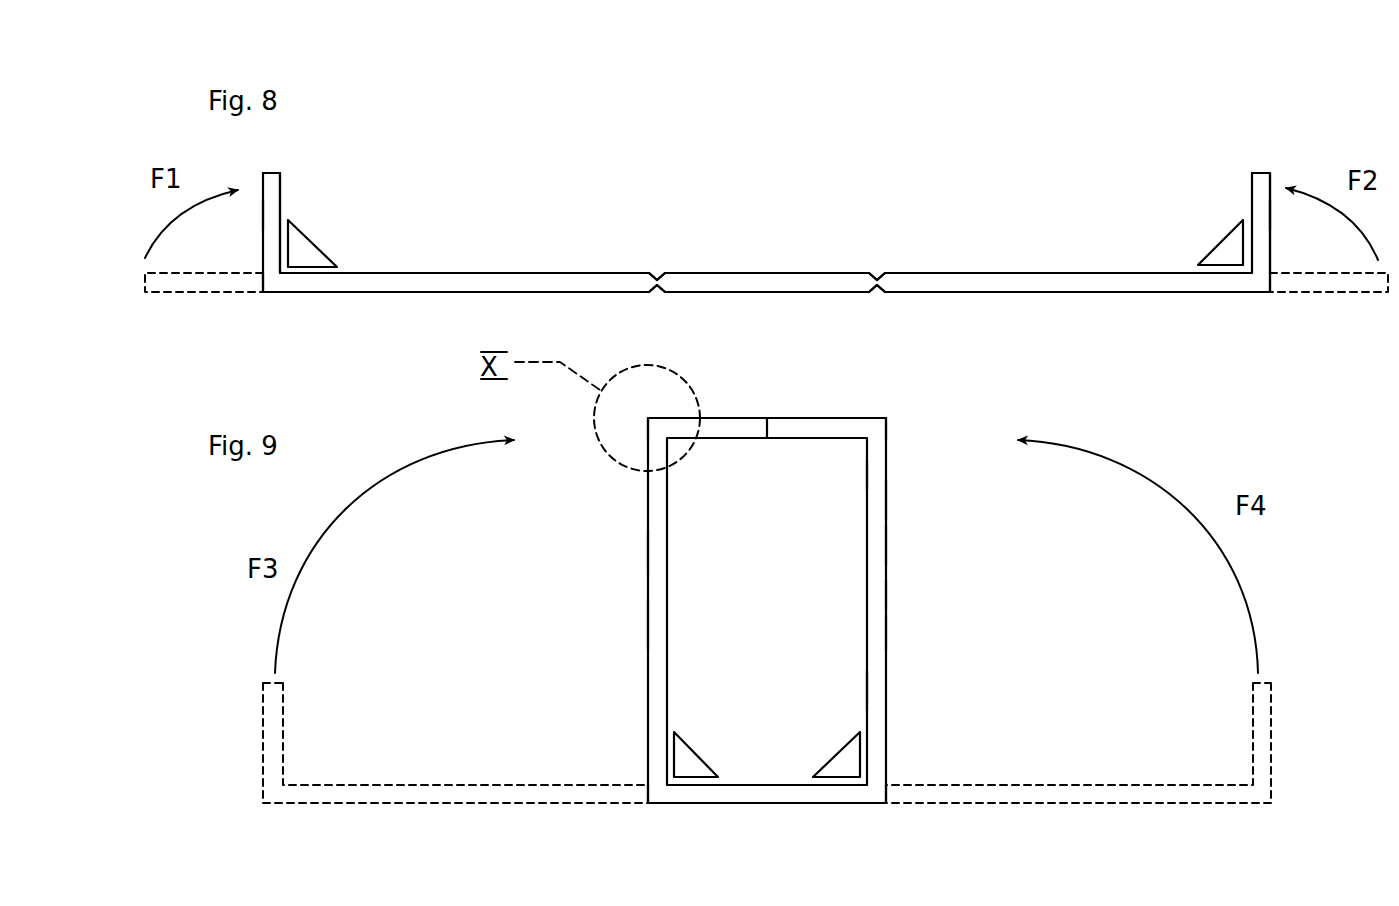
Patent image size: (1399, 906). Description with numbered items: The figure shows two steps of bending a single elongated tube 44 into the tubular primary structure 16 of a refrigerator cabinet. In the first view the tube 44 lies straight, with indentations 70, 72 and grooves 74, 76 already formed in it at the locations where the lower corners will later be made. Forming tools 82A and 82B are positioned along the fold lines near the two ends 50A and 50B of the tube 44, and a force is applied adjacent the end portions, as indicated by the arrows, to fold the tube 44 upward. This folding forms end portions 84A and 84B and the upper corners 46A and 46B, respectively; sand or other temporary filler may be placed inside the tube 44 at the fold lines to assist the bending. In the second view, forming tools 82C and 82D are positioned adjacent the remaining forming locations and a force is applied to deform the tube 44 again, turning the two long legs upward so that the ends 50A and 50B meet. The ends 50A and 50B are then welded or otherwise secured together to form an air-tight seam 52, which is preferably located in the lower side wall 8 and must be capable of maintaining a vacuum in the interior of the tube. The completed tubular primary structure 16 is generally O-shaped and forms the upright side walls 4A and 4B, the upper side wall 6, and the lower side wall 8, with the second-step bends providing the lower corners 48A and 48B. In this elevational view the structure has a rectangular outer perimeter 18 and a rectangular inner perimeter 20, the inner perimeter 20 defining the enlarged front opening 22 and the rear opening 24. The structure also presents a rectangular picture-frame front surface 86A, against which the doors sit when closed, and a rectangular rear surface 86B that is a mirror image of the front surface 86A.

In FIG. 9, the upright side wall 4A is at (647, 552).
In FIG. 9, the upright side wall 4B is at (887, 545).
In FIG. 9, the upper side wall 6 is at (852, 418).
In FIG. 9, the lower side wall 8 is at (767, 803).
In FIG. 9, the tubular primary structure 16 is at (892, 595).
In FIG. 9, the rectangular outer perimeter 18 is at (887, 503).
In FIG. 9, the rectangular inner perimeter 20 is at (860, 474).
In FIG. 9, the front opening 22 is at (742, 538).
In FIG. 9, the rear opening 24 is at (788, 538).
In FIG. 8, the elongated tube 44 is at (547, 272).
In FIG. 9, the elongated tube 44 is at (647, 624).
In FIG. 8, the upper corner 46A is at (263, 292).
In FIG. 9, the upper corner 46A is at (647, 420).
In FIG. 8, the upper corner 46B is at (1270, 290).
In FIG. 9, the upper corner 46B is at (885, 418).
In FIG. 9, the lower corner 48A is at (648, 803).
In FIG. 9, the lower corner 48B is at (886, 803).
In FIG. 8, the tube end 50A is at (273, 172).
In FIG. 9, the tube end 50A is at (755, 425).
In FIG. 8, the tube end 50B is at (1258, 173).
In FIG. 9, the tube end 50B is at (793, 425).
In FIG. 9, the air-tight seam 52 is at (767, 418).
In FIG. 8, the indentation 70 is at (660, 280).
In FIG. 8, the indentation 72 is at (767, 276).
In FIG. 8, the groove 74 is at (657, 278).
In FIG. 8, the groove 76 is at (657, 288).
In FIG. 8, the forming tool 82A is at (317, 247).
In FIG. 8, the forming tool 82B is at (1217, 252).
In FIG. 9, the forming tool 82C is at (690, 758).
In FIG. 9, the forming tool 82D is at (830, 760).
In FIG. 8, the end portion 84A is at (263, 210).
In FIG. 8, the end portion 84B is at (1270, 205).
In FIG. 9, the front surface 86A is at (875, 690).
In FIG. 9, the rear surface 86B is at (892, 630).